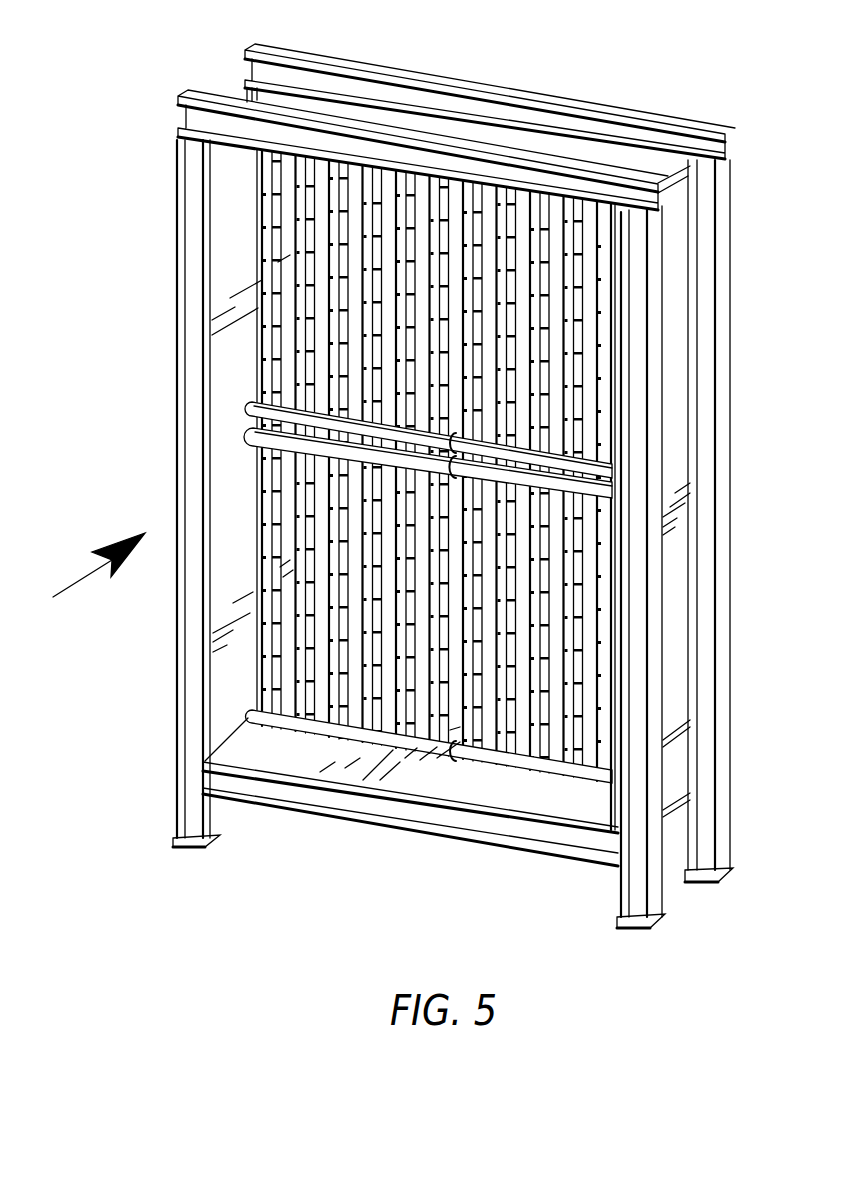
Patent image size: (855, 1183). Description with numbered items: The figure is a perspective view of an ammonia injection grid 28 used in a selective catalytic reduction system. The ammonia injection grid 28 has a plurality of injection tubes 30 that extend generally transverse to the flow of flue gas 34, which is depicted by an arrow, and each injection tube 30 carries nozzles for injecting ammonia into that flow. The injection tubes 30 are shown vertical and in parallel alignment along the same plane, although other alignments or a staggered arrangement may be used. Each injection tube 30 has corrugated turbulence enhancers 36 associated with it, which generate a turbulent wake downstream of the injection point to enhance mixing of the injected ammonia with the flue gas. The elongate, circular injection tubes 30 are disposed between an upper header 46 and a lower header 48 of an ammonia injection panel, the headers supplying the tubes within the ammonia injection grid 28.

The ammonia injection grid 28 is at (456, 478).
The injection tube 30 is at (337, 702).
The flow of flue gas 34 is at (75, 577).
The corrugated turbulence enhancer 36 is at (456, 551).
The upper header 46 is at (255, 445).
The lower header 48 is at (615, 471).